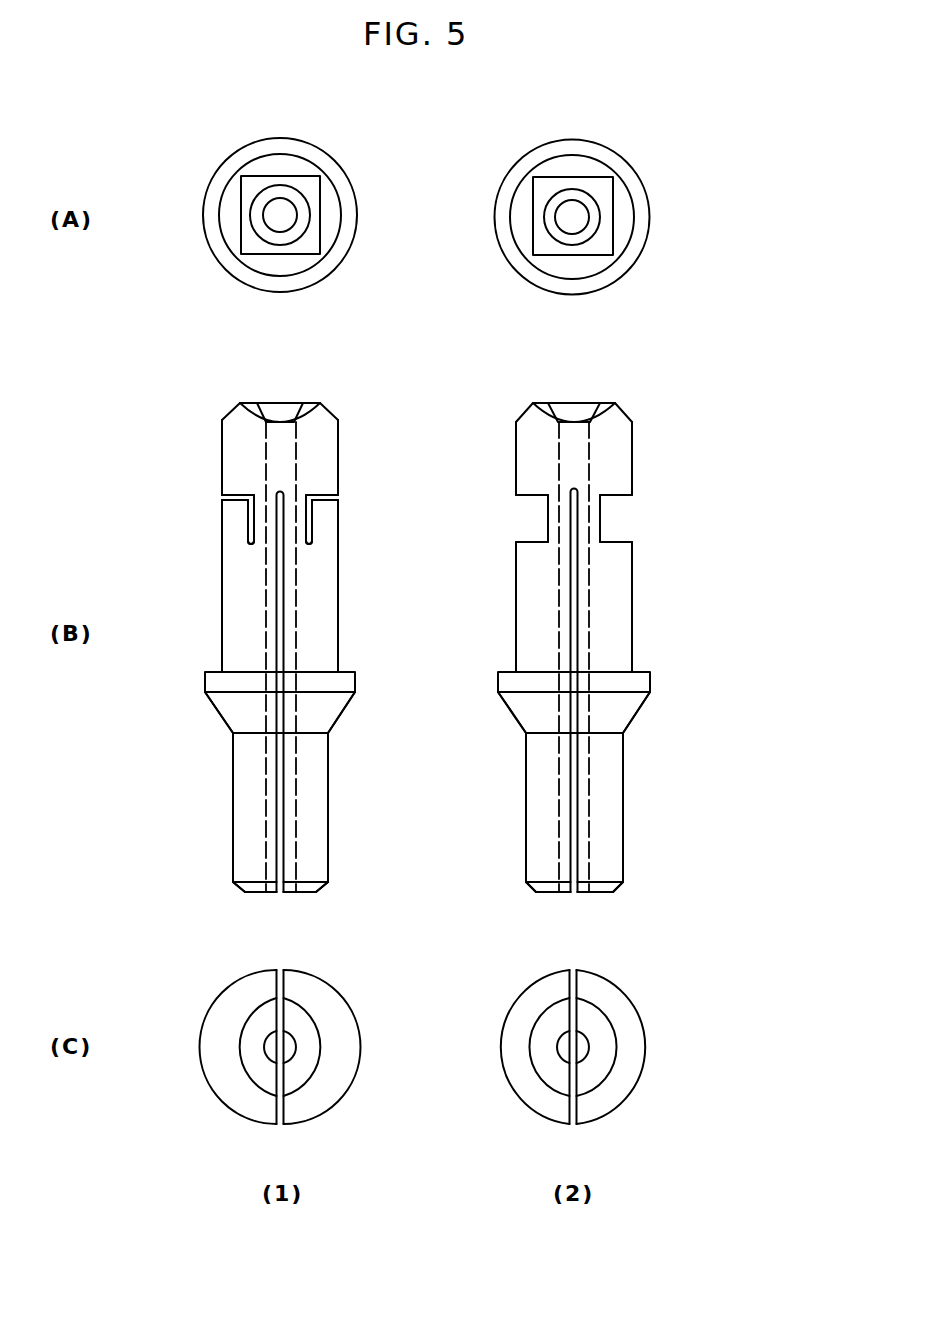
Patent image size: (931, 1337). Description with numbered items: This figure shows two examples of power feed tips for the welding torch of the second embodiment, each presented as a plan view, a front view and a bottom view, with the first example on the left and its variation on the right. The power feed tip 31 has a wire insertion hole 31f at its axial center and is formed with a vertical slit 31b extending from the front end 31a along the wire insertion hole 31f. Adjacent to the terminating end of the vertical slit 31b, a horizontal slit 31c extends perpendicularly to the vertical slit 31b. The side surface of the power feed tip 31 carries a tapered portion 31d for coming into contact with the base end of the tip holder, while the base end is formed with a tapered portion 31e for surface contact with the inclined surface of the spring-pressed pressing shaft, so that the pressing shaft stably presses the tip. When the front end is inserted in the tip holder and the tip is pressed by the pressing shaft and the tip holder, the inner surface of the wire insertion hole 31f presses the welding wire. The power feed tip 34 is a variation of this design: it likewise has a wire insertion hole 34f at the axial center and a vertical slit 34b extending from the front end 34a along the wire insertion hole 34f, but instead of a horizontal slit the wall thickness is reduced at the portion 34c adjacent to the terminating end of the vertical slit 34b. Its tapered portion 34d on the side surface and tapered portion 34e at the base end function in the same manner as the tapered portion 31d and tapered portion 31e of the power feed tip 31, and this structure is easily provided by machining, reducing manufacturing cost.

The power feed tip 31 is at (333, 445).
The front end 31a is at (305, 893).
The vertical slit 31b is at (278, 773).
The horizontal slit 31c is at (323, 495).
The tapered portion 31d is at (345, 713).
The tapered portion 31e is at (328, 412).
The wire insertion hole 31f is at (297, 215).
The power feed tip 34 is at (632, 442).
The front end 34a is at (615, 892).
The vertical slit 34b is at (575, 780).
The reduced wall thickness portion 34c is at (600, 517).
The tapered portion 34d is at (642, 710).
The tapered portion 34e is at (625, 413).
The wire insertion hole 34f is at (588, 217).